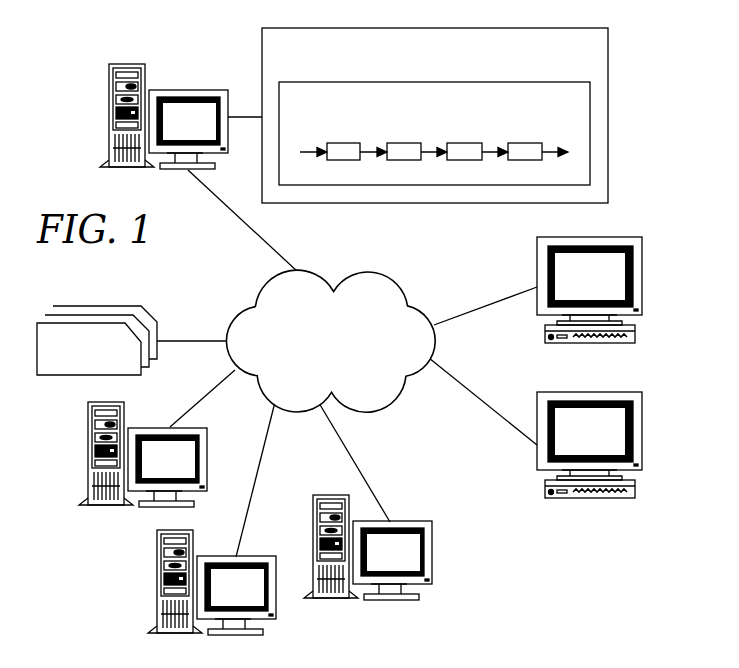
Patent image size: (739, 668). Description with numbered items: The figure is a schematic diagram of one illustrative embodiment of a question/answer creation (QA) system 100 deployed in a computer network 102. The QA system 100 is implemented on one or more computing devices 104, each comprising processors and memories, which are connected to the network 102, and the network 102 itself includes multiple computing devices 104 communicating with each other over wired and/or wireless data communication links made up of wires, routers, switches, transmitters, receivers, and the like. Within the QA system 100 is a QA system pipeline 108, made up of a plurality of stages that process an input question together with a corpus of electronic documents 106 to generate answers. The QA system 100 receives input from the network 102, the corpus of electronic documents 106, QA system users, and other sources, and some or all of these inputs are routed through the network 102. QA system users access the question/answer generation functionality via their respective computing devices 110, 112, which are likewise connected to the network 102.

The question/answer creation (QA) system 100 is at (414, 321).
The computer network 102 is at (367, 272).
The computing devices 104 is at (109, 86).
The corpus of electronic documents 106 is at (80, 306).
The QA system pipeline 108 is at (322, 82).
The computing device of QA system user 110 is at (642, 257).
The computing device of QA system user 112 is at (642, 415).